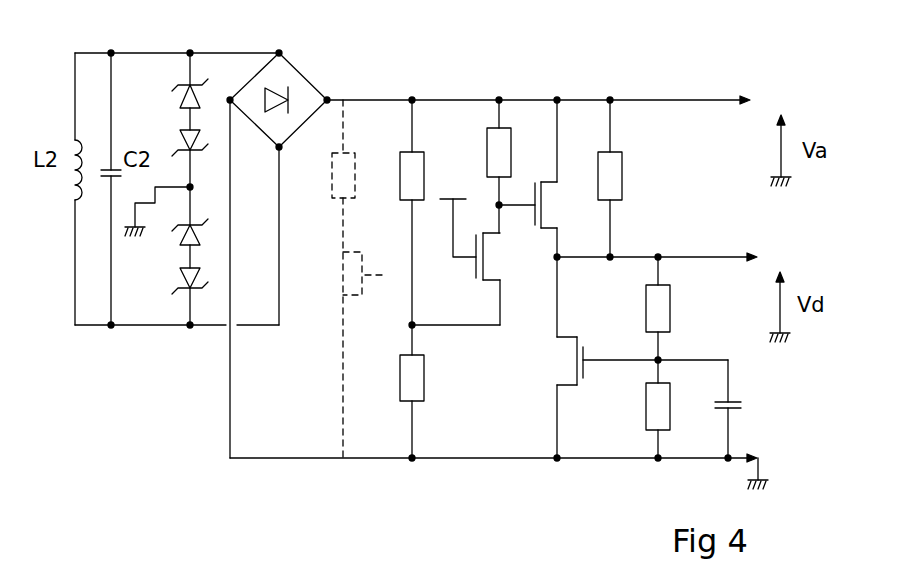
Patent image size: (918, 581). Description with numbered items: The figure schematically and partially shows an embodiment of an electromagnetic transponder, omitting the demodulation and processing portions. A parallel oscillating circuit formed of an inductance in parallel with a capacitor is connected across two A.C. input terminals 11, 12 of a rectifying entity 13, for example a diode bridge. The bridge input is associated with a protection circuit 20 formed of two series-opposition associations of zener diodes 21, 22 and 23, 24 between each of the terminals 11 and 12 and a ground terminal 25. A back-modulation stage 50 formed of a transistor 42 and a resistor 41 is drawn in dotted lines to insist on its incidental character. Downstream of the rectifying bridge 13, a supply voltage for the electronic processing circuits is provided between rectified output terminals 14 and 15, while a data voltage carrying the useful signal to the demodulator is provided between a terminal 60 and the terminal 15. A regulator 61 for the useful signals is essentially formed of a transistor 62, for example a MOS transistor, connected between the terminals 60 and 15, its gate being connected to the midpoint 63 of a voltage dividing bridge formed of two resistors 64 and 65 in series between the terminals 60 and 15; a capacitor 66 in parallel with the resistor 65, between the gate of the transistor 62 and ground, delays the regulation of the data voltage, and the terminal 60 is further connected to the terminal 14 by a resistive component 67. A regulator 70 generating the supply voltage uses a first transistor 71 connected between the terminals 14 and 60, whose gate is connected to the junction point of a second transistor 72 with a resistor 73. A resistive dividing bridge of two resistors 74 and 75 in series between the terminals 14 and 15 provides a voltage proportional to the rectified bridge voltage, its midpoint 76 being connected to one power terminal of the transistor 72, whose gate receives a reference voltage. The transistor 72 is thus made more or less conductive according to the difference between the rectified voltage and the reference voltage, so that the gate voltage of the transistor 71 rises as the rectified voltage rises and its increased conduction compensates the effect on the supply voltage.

The A.C. input terminal 11 is at (227, 53).
The A.C. input terminal 12 is at (152, 326).
The rectifying entity 13 is at (300, 72).
The rectified output terminal 14 is at (660, 100).
The rectified output terminal 15 is at (762, 461).
The protection circuit 20 is at (160, 134).
The zener diode 21 is at (200, 96).
The zener diode 22 is at (198, 134).
The zener diode 23 is at (178, 240).
The zener diode 24 is at (180, 278).
The ground terminal 25 is at (192, 187).
The resistor 41 is at (332, 178).
The transistor 42 is at (357, 268).
The back-modulation stage 50 is at (330, 314).
The terminal 60 is at (720, 257).
The regulator 61 is at (608, 450).
The transistor 62 is at (560, 363).
The midpoint 63 is at (654, 363).
The resistor 64 is at (646, 306).
The resistor 65 is at (672, 407).
The capacitor 66 is at (743, 405).
The resistive component 67 is at (625, 185).
The regulator 70 is at (490, 358).
The first transistor 71 is at (548, 203).
The second transistor 72 is at (497, 266).
The resistor 73 is at (493, 145).
The resistor 74 is at (390, 178).
The resistor 75 is at (403, 370).
The midpoint 76 is at (413, 325).